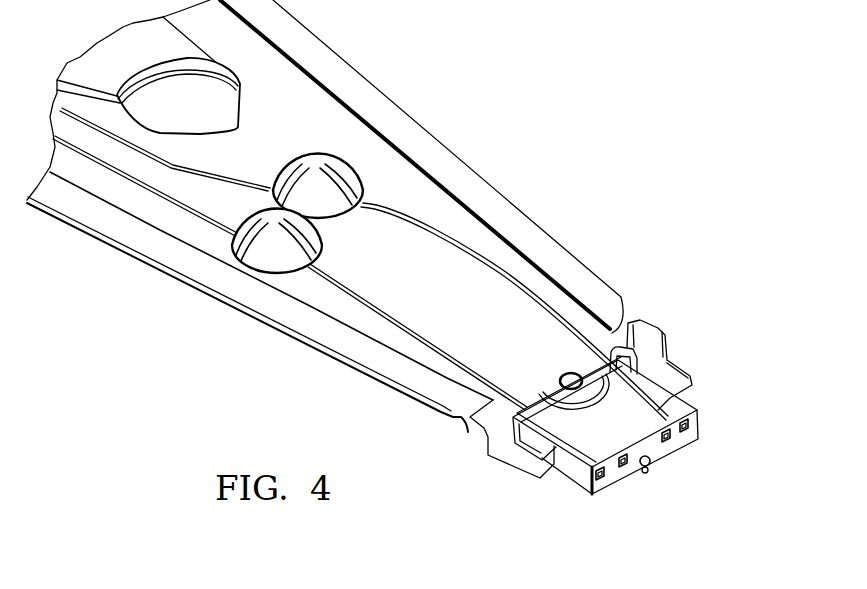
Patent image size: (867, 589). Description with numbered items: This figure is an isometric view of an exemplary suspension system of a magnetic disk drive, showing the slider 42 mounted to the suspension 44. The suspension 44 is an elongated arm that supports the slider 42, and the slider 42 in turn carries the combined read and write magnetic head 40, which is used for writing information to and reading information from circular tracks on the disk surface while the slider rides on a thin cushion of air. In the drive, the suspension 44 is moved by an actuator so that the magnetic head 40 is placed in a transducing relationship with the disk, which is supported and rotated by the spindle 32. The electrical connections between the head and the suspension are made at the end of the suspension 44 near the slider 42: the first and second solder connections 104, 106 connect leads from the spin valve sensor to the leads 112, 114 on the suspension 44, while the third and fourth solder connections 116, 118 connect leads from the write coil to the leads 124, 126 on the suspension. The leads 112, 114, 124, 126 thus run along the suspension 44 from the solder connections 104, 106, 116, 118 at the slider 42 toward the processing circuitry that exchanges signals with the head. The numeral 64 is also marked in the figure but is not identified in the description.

The suspension 44 is at (478, 162).
The lead 114 is at (523, 288).
The lead 112 is at (357, 297).
The lead 124 is at (373, 297).
The lead 126 is at (448, 247).
The slider 42 is at (536, 492).
The magnetic head 40 is at (650, 478).
The first solder connection 104 is at (599, 481).
The third solder connection 116 is at (624, 468).
The fourth solder connection 118 is at (673, 439).
The second solder connection 106 is at (689, 423).
The spindle 32 is at (280, 582).
The flex circuit 64 is at (443, 582).